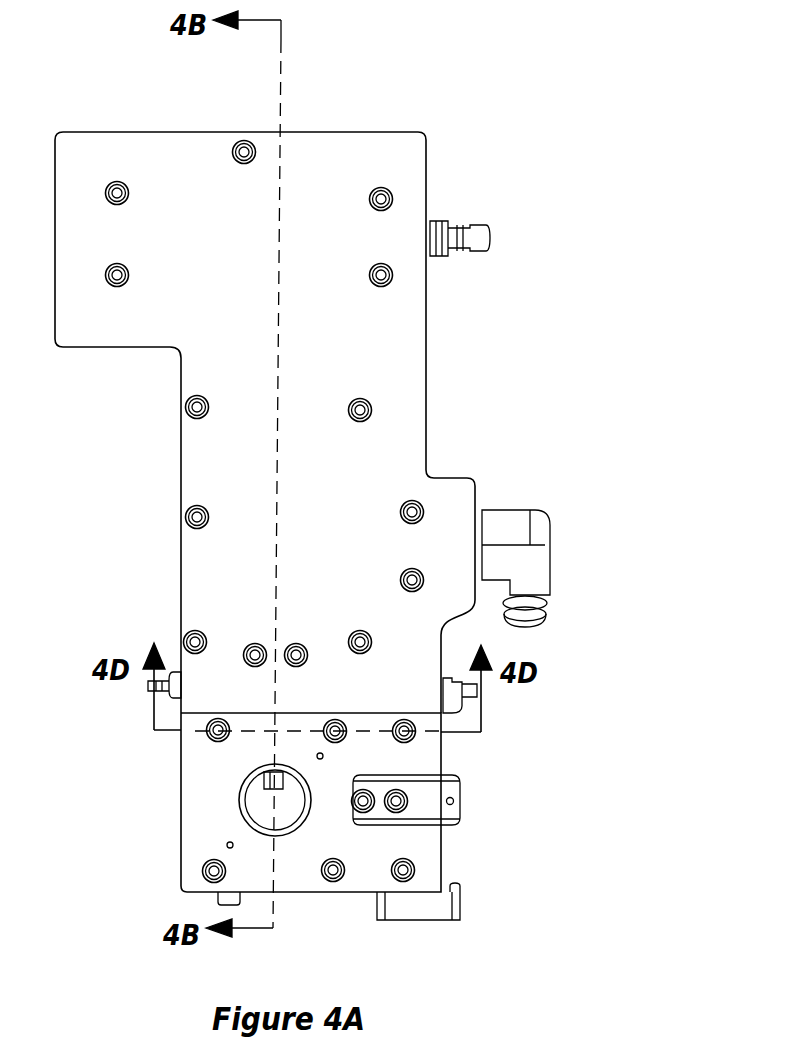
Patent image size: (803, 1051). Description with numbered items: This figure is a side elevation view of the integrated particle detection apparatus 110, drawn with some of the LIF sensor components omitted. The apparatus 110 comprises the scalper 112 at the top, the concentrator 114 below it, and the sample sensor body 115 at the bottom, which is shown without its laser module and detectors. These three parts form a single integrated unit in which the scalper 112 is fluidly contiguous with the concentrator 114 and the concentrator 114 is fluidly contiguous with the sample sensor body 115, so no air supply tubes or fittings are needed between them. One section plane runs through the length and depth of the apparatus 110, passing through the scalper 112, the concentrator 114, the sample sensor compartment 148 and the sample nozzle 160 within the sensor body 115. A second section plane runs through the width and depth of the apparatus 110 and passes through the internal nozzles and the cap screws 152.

The integrated particle detection apparatus 110 is at (572, 208).
The scalper 112 is at (168, 303).
The concentrator 114 is at (252, 590).
The sample sensor body 115 is at (303, 868).
The sample sensor compartment 148 is at (262, 812).
The cap screws 152 is at (415, 733).
The sample nozzle 160 is at (263, 812).